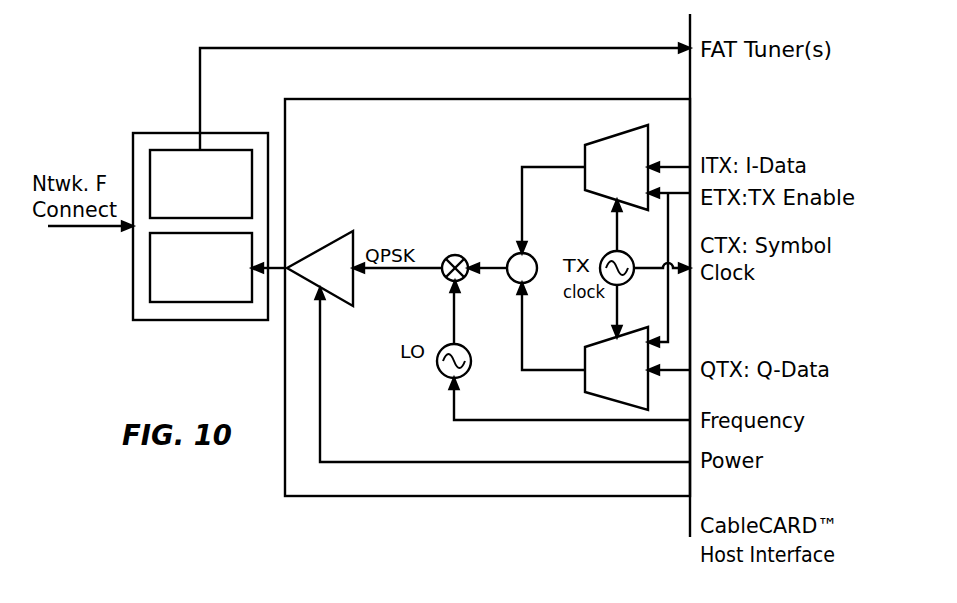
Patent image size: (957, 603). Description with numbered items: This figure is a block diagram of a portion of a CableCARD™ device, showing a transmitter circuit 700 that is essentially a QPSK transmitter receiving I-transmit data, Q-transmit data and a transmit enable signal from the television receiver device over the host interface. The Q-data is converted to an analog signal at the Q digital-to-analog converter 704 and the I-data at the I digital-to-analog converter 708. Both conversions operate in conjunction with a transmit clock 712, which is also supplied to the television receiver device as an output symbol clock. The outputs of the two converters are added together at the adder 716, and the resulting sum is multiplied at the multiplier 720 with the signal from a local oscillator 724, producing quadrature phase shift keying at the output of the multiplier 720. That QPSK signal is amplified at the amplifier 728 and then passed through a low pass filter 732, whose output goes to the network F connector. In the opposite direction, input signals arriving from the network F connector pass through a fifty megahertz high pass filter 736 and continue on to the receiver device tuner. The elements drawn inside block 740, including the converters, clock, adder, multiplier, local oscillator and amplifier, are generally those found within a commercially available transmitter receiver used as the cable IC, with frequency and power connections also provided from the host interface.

The transmitter circuit 700 is at (115, 64).
The Q digital-to-analog converter 704 is at (600, 396).
The I digital-to-analog converter 708 is at (620, 133).
The transmit clock 712 is at (627, 281).
The adder 716 is at (538, 267).
The multiplier 720 is at (452, 255).
The local oscillator 724 is at (440, 370).
The amplifier 728 is at (330, 236).
The low pass filter 732 is at (242, 303).
The 50 megahertz high pass filter 736 is at (172, 148).
The block 740 is at (488, 497).